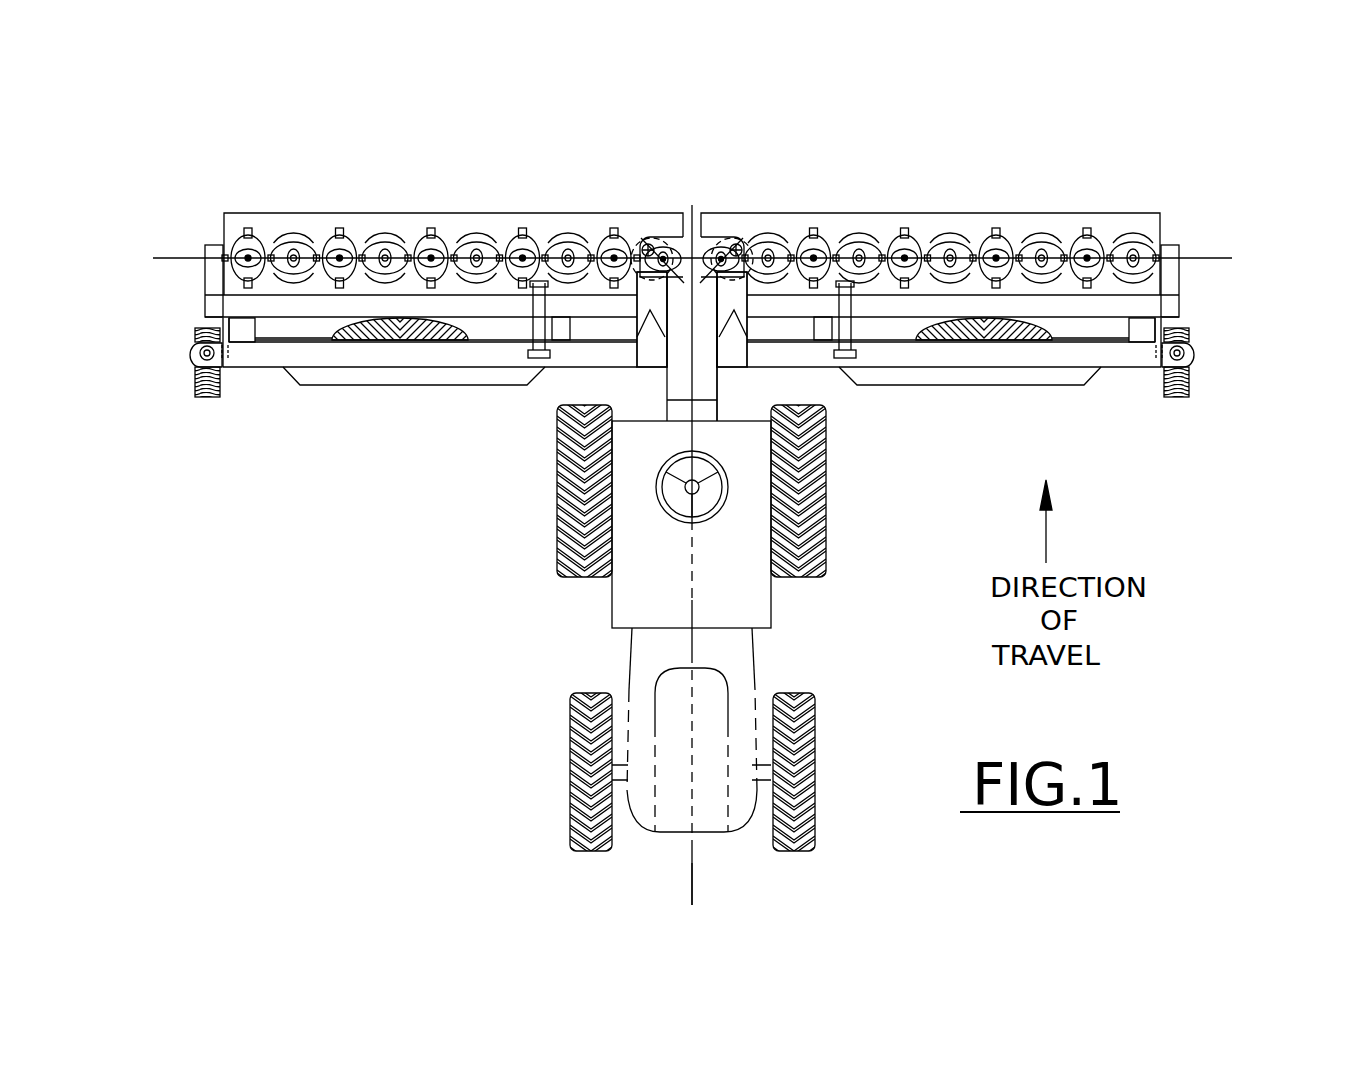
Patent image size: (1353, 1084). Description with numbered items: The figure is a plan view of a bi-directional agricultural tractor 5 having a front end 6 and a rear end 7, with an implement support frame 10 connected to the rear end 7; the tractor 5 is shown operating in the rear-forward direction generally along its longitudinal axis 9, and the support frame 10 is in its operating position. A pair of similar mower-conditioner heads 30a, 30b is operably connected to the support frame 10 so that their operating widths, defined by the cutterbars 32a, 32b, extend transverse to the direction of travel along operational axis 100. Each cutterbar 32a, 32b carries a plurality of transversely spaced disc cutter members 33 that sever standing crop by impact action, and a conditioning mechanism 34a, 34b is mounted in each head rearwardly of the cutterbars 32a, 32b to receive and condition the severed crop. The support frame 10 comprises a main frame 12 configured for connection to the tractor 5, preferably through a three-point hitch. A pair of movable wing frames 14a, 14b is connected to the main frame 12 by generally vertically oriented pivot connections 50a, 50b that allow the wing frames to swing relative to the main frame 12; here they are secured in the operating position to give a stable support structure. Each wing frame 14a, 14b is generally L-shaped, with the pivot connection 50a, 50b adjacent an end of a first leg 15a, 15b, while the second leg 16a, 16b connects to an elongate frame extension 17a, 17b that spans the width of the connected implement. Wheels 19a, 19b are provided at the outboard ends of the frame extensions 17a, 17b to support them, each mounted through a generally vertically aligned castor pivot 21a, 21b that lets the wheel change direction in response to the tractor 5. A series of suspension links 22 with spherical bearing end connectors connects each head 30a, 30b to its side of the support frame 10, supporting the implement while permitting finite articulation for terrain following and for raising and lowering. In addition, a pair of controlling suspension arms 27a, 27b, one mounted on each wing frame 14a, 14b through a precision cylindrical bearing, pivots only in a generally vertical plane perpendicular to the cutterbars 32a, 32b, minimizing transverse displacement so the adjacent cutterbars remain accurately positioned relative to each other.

The tractor 5 is at (523, 651).
The front end 6 is at (661, 855).
The rear end 7 is at (744, 402).
The longitudinal axis 9 is at (692, 863).
The implement support frame 10 is at (752, 202).
The main frame 12 is at (576, 482).
The wing frame 14a is at (595, 344).
The wing frame 14b is at (789, 344).
The first leg 15a is at (650, 300).
The first leg 15b is at (735, 300).
The second leg 16a is at (598, 358).
The second leg 16b is at (786, 360).
The frame extension 17a is at (248, 358).
The frame extension 17b is at (1130, 358).
The wheel 19a is at (195, 387).
The wheel 19b is at (1190, 385).
The castor pivot 21a is at (202, 352).
The castor pivot 21b is at (1185, 352).
The suspension link 22 is at (220, 323).
The controlling suspension arm 27a is at (516, 336).
The controlling suspension arm 27b is at (868, 336).
The mower-conditioner head 30a is at (337, 158).
The mower-conditioner head 30b is at (1005, 166).
The cutterbar 32a is at (470, 213).
The cutterbar 32b is at (940, 213).
The disc cutter member 33 is at (338, 240).
The conditioning mechanism 34a is at (372, 359).
The conditioning mechanism 34b is at (976, 360).
The pivot connection 50a is at (655, 243).
The pivot connection 50b is at (740, 240).
The operational axis 100 is at (185, 257).